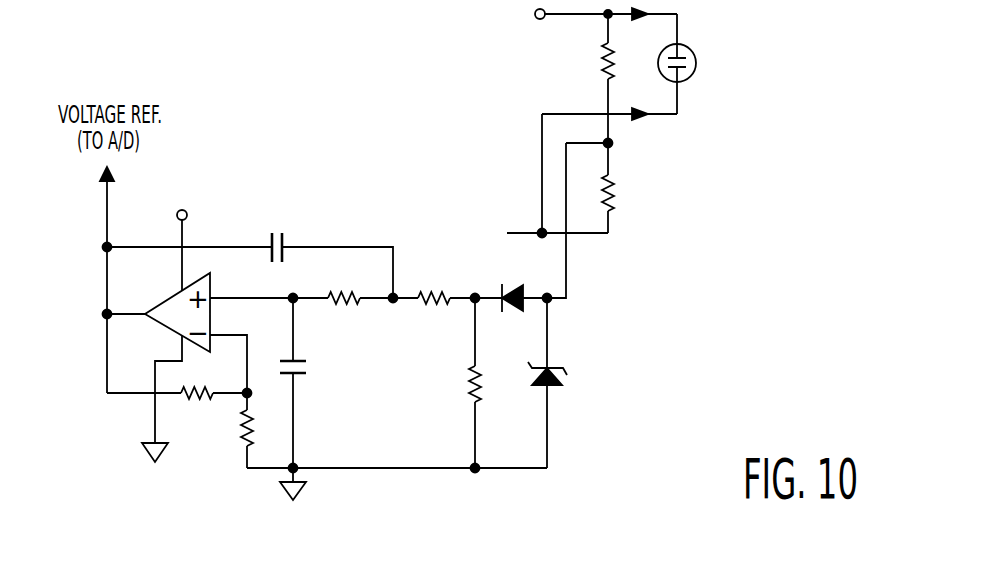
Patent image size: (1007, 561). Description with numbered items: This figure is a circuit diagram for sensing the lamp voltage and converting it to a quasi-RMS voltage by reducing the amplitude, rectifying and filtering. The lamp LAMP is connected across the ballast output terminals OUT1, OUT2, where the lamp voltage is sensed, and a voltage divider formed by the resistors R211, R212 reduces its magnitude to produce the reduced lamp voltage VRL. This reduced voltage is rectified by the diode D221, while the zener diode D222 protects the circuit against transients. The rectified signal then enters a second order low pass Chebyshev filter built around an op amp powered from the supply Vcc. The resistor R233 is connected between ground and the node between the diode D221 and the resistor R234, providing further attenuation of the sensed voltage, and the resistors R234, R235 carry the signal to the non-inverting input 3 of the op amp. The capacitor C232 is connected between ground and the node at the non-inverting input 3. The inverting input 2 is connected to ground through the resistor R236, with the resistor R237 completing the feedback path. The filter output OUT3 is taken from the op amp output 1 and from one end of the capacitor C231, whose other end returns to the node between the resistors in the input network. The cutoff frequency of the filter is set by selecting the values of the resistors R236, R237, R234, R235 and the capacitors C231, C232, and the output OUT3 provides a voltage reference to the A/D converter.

The ballast output terminal OUT1 is at (577, 14).
The ballast output terminal OUT2 is at (530, 234).
The filter output OUT3 is at (113, 178).
The lamp LAMP is at (709, 64).
The resistor R211 is at (585, 78).
The resistor R212 is at (630, 186).
The resistor R233 is at (454, 383).
The resistor R234 is at (434, 281).
The resistor R235 is at (345, 281).
The resistor R236 is at (226, 429).
The resistor R237 is at (177, 378).
The capacitor C231 is at (250, 252).
The capacitor C232 is at (324, 397).
The diode D221 is at (513, 283).
The zener diode D222 is at (569, 383).
The reduced lamp voltage VRL is at (566, 270).
The supply voltage Vcc is at (179, 236).
The op amp output 1 is at (127, 298).
The op amp inverting input 2 is at (228, 350).
The op amp non-inverting input 3 is at (251, 283).